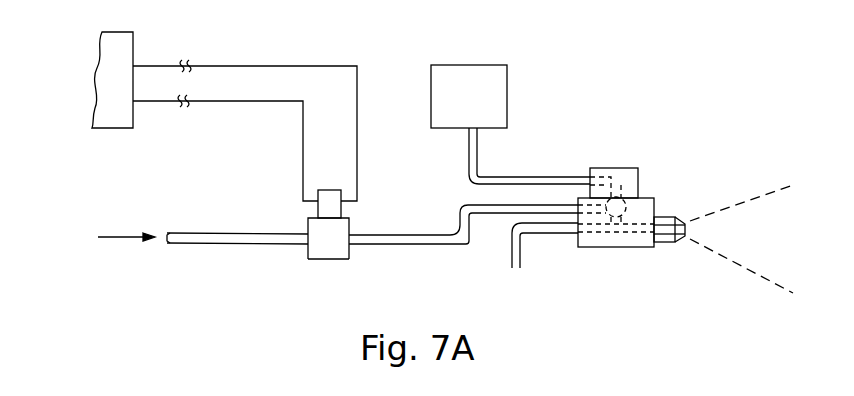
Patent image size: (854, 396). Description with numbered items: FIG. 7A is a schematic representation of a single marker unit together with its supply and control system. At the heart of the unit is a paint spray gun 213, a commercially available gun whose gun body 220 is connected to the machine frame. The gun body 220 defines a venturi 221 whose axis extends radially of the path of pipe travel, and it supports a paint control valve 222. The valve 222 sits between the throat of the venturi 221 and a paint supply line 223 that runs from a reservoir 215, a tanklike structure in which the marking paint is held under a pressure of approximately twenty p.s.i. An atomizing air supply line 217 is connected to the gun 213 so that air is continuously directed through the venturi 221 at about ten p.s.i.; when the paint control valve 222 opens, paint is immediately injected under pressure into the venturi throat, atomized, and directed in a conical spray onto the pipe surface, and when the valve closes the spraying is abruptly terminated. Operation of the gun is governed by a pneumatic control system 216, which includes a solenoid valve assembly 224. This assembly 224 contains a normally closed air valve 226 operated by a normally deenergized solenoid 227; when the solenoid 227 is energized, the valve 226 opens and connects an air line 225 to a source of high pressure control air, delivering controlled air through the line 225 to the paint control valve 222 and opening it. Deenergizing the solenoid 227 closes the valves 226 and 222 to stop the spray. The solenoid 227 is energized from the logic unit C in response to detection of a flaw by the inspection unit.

The logic unit C is at (100, 129).
The paint spray gun 213 is at (628, 256).
The reservoir 215 is at (512, 92).
The pneumatic control system 216 is at (307, 287).
The atomizing air supply line 217 is at (510, 258).
The gun body 220 is at (592, 249).
The venturi 221 is at (686, 229).
The paint control valve 222 is at (638, 193).
The paint supply line 223 is at (553, 177).
The solenoid valve assembly 224 is at (309, 228).
The air line 225 is at (470, 207).
The air valve 226 is at (329, 251).
The solenoid 227 is at (327, 196).